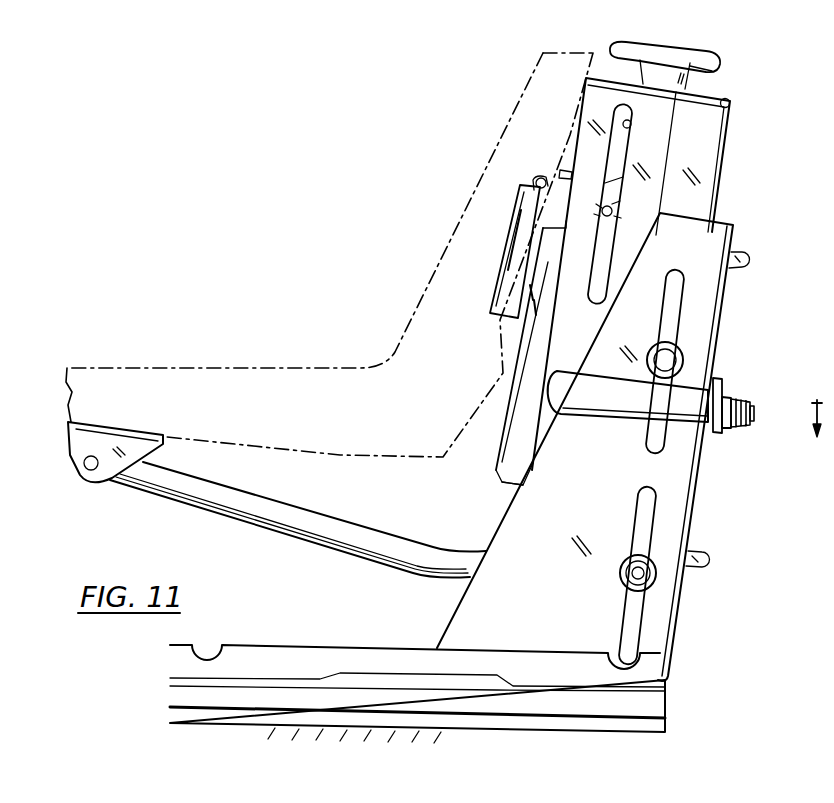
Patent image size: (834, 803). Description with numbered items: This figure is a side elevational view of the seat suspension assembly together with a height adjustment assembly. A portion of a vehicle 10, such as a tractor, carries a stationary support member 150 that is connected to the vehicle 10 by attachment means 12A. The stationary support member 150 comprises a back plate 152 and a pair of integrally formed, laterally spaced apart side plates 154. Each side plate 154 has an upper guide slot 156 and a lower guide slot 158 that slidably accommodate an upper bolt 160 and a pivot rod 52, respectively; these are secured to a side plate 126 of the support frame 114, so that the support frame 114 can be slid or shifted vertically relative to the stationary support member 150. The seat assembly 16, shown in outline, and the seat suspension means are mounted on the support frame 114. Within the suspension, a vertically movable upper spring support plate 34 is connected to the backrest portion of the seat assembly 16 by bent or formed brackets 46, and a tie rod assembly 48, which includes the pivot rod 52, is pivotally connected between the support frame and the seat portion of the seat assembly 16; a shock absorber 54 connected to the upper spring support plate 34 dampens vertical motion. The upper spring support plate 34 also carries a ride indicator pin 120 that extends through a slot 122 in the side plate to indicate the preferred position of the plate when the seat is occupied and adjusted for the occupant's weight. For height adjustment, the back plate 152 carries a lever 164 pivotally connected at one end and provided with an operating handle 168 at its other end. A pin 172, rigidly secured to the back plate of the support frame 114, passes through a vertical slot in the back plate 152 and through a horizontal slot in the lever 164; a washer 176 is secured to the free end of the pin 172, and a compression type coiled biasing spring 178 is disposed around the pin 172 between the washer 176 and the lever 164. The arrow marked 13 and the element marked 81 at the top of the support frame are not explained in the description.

The vehicle 10 is at (300, 732).
The attachment means 12A is at (662, 706).
The viewing direction arrow 13 is at (820, 432).
The seat assembly 16 is at (413, 320).
The upper spring support plate 34 is at (537, 178).
The brackets 46 is at (518, 208).
The tie rod assembly 48 is at (328, 513).
The pivot rod 52 is at (643, 576).
The shock absorber 54 is at (498, 481).
The adjustment handle 81 is at (722, 58).
The support frame 114 is at (727, 158).
The ride indicator pin 120 is at (613, 211).
The slot 122 is at (630, 125).
The side plate 126 is at (533, 428).
The stationary support member 150 is at (699, 494).
The back plate 152 is at (696, 521).
The side plates 154 is at (566, 594).
The upper guide slot 156 is at (681, 319).
The lower guide slot 158 is at (632, 627).
The upper bolt 160 is at (681, 364).
The lever 164 is at (722, 390).
The operating handle 168 is at (608, 423).
The pin 172 is at (754, 414).
The washer 176 is at (736, 427).
The compression type coiled biasing spring 178 is at (727, 430).